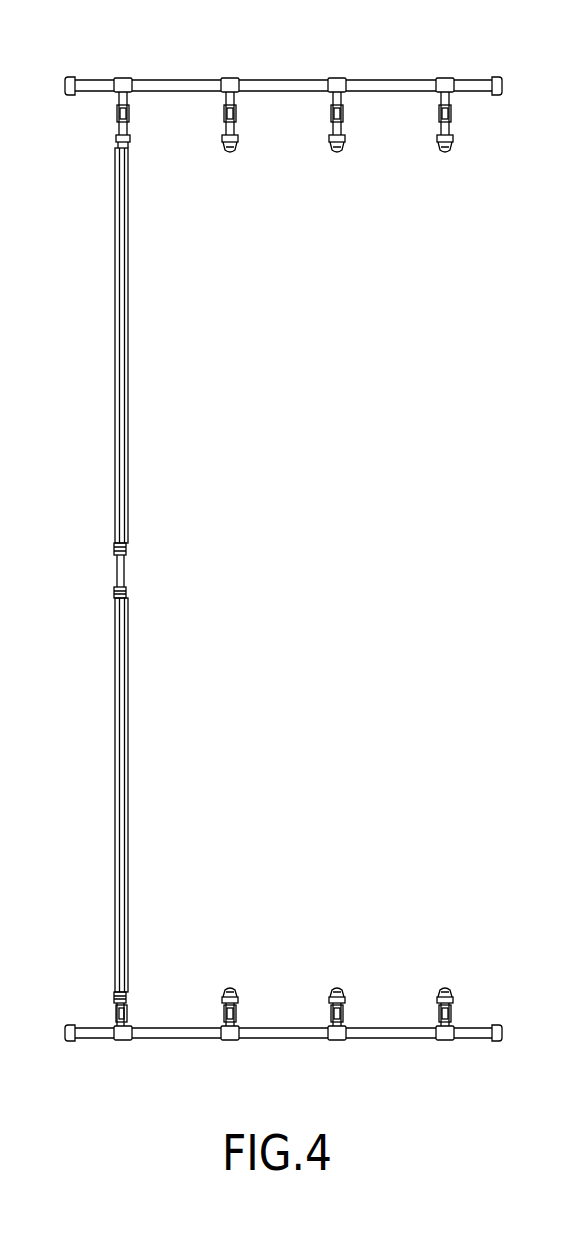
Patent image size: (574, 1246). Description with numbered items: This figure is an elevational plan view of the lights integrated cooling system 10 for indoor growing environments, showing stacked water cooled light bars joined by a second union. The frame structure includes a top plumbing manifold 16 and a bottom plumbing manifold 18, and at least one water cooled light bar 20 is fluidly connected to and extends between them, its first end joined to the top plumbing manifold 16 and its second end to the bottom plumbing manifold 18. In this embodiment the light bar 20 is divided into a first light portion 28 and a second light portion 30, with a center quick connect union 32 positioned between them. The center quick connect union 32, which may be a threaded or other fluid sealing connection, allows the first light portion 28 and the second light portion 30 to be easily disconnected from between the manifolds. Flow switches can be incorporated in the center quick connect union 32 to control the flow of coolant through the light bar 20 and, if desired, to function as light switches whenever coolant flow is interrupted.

The lights integrated cooling system 10 is at (462, 462).
The top plumbing manifold 16 is at (390, 81).
The bottom plumbing manifold 18 is at (400, 1032).
The water cooled light bar 20 is at (106, 681).
The first light portion 28 is at (128, 323).
The second light portion 30 is at (130, 842).
The center quick connect union 32 is at (115, 580).